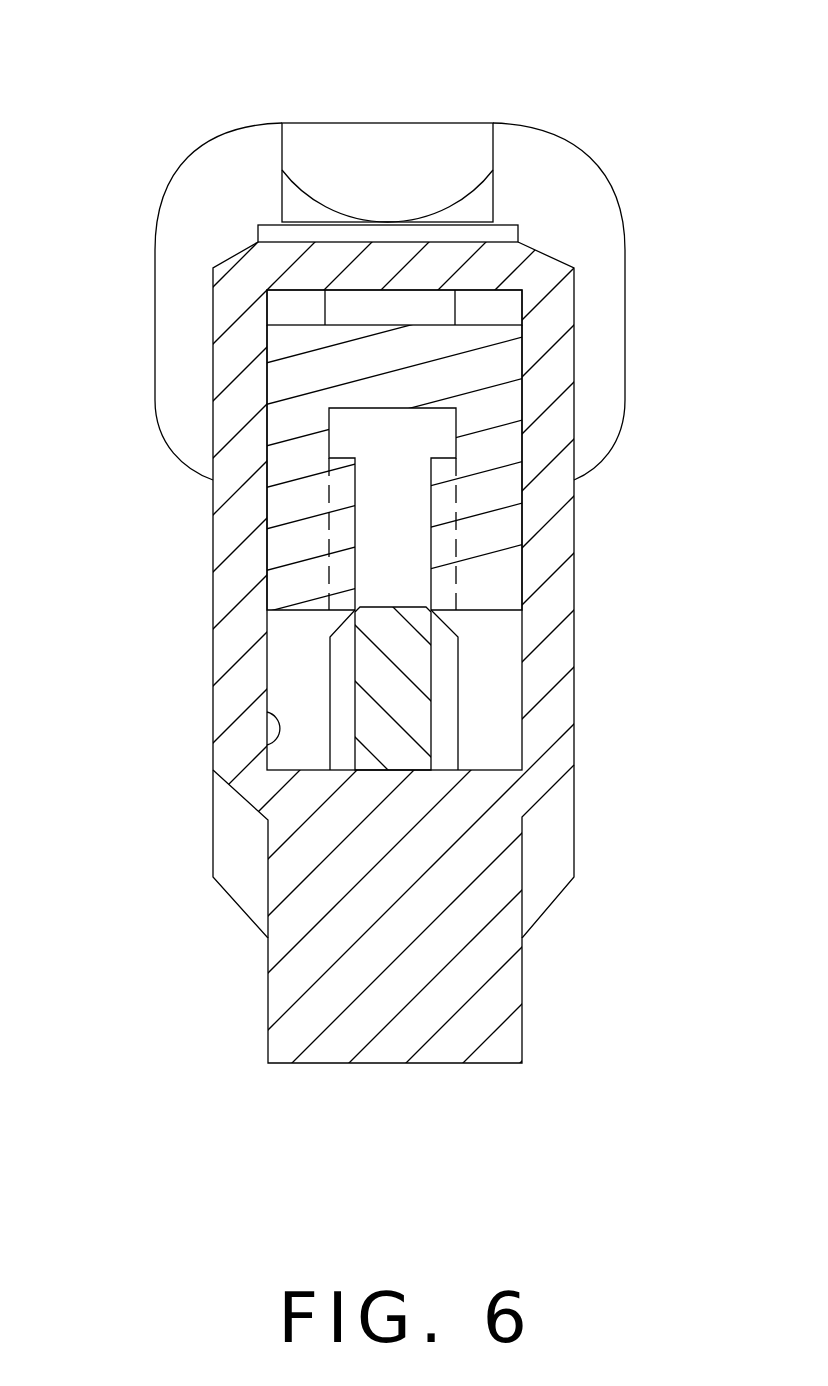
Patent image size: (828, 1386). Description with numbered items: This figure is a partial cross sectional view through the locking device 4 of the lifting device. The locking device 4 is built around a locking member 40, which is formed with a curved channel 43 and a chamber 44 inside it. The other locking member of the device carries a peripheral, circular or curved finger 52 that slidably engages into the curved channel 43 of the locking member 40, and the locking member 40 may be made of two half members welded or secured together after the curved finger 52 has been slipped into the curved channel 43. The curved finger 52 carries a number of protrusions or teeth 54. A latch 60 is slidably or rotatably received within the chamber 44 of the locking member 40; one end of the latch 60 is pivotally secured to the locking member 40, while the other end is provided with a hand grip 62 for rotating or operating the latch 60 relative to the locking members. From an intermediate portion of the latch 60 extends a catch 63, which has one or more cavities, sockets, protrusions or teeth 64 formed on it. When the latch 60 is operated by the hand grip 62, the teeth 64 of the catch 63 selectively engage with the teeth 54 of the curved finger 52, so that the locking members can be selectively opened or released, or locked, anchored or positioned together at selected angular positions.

The locking device 4 is at (222, 134).
The locking member 40 is at (396, 1040).
The curved channel 43 is at (267, 748).
The chamber 44 is at (483, 303).
The curved finger 52 is at (407, 723).
The teeth 54 is at (447, 678).
The latch 60 is at (462, 121).
The hand grip 62 is at (383, 145).
The catch 63 is at (300, 533).
The teeth 64 is at (460, 521).